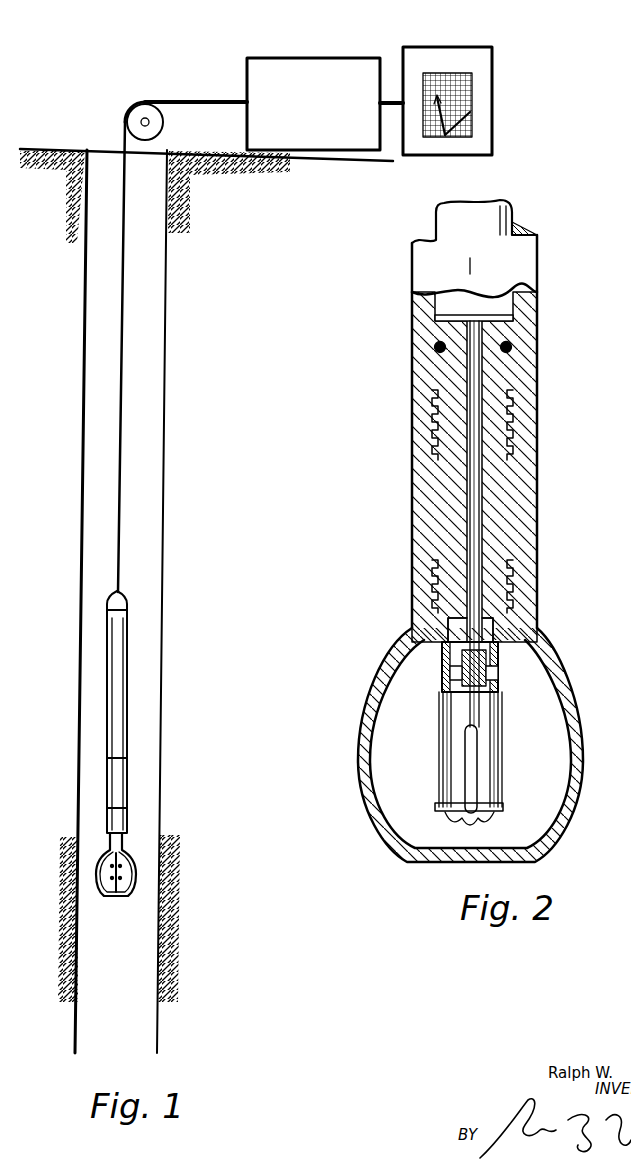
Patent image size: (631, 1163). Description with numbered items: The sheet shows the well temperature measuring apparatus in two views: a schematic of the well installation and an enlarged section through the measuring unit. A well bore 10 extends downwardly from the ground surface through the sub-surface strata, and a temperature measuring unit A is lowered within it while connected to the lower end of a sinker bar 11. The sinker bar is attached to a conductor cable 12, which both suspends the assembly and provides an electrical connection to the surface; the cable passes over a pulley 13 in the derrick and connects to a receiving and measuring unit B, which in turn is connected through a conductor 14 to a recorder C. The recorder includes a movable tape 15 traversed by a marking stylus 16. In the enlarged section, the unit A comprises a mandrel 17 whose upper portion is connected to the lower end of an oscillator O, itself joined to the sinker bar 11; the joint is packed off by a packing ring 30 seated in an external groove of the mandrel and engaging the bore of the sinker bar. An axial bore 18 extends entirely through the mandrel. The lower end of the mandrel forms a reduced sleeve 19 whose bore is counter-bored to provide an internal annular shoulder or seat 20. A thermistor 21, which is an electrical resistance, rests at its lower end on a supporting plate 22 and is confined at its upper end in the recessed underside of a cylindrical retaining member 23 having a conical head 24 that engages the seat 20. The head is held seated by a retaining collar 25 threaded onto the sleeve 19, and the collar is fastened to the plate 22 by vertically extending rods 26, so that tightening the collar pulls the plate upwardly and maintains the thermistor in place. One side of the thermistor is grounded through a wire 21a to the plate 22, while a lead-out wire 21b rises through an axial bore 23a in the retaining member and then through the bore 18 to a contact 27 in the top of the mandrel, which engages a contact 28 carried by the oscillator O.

In FIG. 1, the well bore 10 is at (160, 372).
In FIG. 1, the sinker bar 11 is at (127, 672).
In FIG. 1, the conductor cable 12 is at (123, 463).
In FIG. 1, the pulley 13 is at (163, 122).
In FIG. 1, the conductor 14 is at (396, 94).
In FIG. 1, the movable tape 15 is at (460, 87).
In FIG. 1, the marking stylus 16 is at (437, 137).
In FIG. 1, the mandrel 17 is at (127, 817).
In FIG. 2, the mandrel 17 is at (518, 485).
In FIG. 2, the axial bore 18 is at (486, 437).
In FIG. 2, the reduced sleeve 19 is at (486, 626).
In FIG. 2, the internal annular shoulder 20 is at (498, 650).
In FIG. 2, the thermistor 21 is at (478, 743).
In FIG. 2, the wire 21a is at (470, 824).
In FIG. 2, the lead-out wire 21b is at (476, 528).
In FIG. 2, the supporting plate 22 is at (503, 806).
In FIG. 2, the cylindrical retaining member 23 is at (498, 708).
In FIG. 2, the axial bore 23a is at (466, 712).
In FIG. 2, the conical head 24 is at (450, 672).
In FIG. 2, the retaining collar 25 is at (498, 680).
In FIG. 2, the rods 26 is at (443, 755).
In FIG. 2, the contact 27 is at (513, 319).
In FIG. 2, the contact 28 is at (435, 306).
In FIG. 2, the packing ring 30 is at (512, 347).
In FIG. 1, the temperature measuring unit A is at (127, 786).
In FIG. 1, the receiving and measuring unit B is at (320, 60).
In FIG. 1, the recorder C is at (478, 60).
In FIG. 2, the oscillator O is at (540, 292).